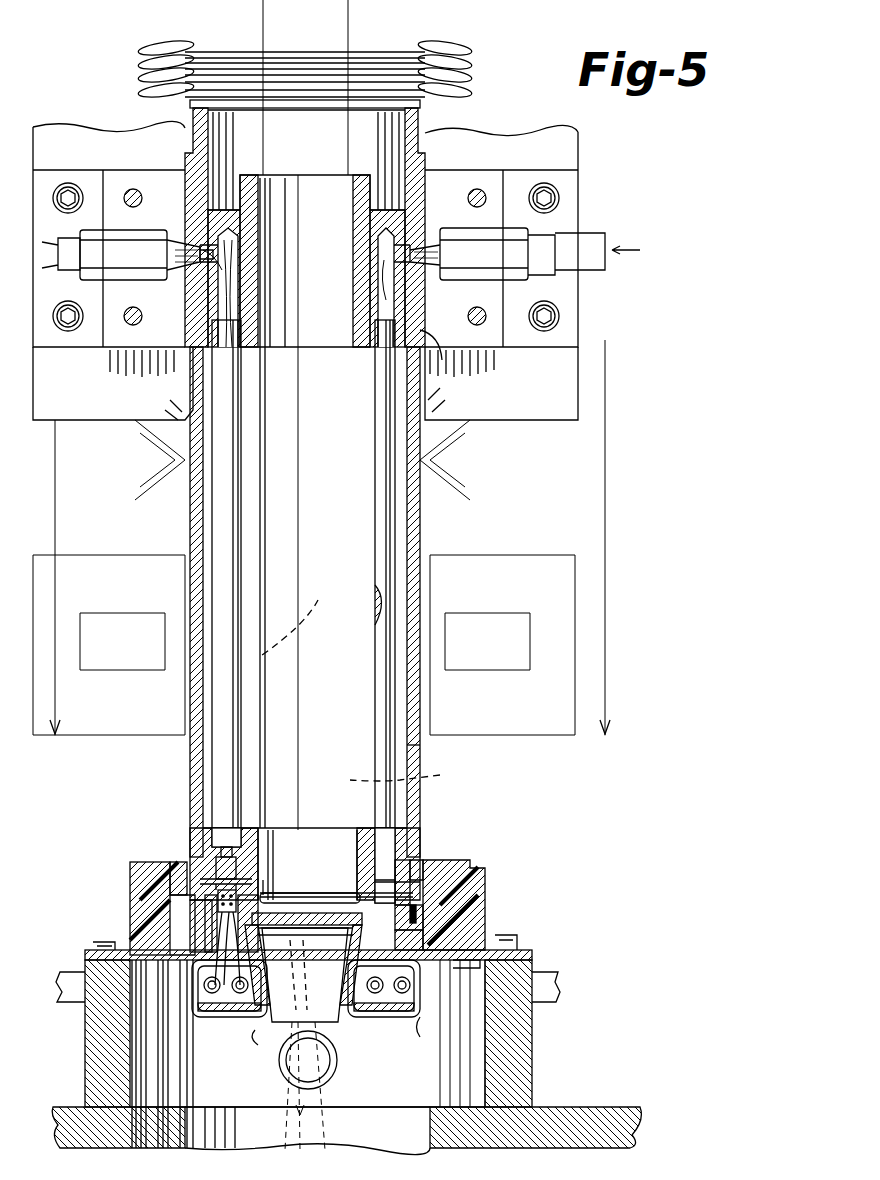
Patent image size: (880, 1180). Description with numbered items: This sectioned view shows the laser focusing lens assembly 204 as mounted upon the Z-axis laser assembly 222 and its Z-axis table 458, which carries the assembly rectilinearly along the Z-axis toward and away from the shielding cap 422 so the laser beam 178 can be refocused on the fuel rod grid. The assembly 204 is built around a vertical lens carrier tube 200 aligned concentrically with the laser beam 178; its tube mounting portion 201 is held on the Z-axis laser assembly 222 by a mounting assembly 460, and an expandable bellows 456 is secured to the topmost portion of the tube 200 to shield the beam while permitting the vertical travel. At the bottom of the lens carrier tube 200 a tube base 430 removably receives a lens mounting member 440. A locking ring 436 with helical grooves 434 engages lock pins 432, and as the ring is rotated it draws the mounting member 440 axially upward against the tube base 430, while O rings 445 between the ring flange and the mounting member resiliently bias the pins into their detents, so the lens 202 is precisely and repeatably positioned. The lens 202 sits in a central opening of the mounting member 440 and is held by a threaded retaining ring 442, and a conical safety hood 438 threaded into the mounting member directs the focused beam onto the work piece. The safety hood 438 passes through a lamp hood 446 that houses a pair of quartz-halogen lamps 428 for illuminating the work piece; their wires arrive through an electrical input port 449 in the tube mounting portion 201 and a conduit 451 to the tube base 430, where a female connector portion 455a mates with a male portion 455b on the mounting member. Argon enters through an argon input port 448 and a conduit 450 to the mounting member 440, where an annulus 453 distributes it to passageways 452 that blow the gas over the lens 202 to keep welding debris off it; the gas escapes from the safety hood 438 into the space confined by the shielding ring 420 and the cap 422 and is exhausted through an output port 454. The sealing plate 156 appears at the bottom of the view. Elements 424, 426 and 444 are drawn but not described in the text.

The sealing plate 156 is at (550, 1110).
The laser beam 178 is at (378, 678).
The lens carrier tube 200 is at (415, 510).
The tube mounting portion 201 is at (442, 365).
The lens 202 is at (300, 895).
The laser focusing lens assembly 204 is at (434, 757).
The Z-axis laser assembly 222 is at (592, 177).
The shielding ring 420 is at (480, 870).
The shielding cap 422 is at (130, 921).
The plate 424 is at (413, 872).
The column 426 is at (427, 1108).
The quartz-halogen lamps 428 is at (436, 1030).
The tube base 430 is at (192, 840).
The lock pins 432 is at (420, 860).
The helical grooves 434 is at (437, 878).
The locking ring 436 is at (430, 914).
The safety hood 438 is at (255, 1032).
The lens mounting member 440 is at (445, 927).
The retaining ring 442 is at (270, 880).
The bearing housing 444 is at (385, 1017).
The O rings 445 is at (428, 896).
The lamp hood 446 is at (422, 1000).
The argon input port 448 is at (518, 235).
The electrical input port 449 is at (96, 230).
The conduit 450 is at (375, 520).
The conduit 451 is at (237, 447).
The passageways 452 is at (301, 958).
The annulus 453 is at (300, 897).
The output port 454 is at (286, 1066).
The female portion of electrical connector 455a is at (200, 862).
The male portion of electrical connector 455b is at (227, 906).
The bellows 456 is at (466, 42).
The Z-axis table 458 is at (555, 375).
The mounting assembly 460 is at (455, 172).